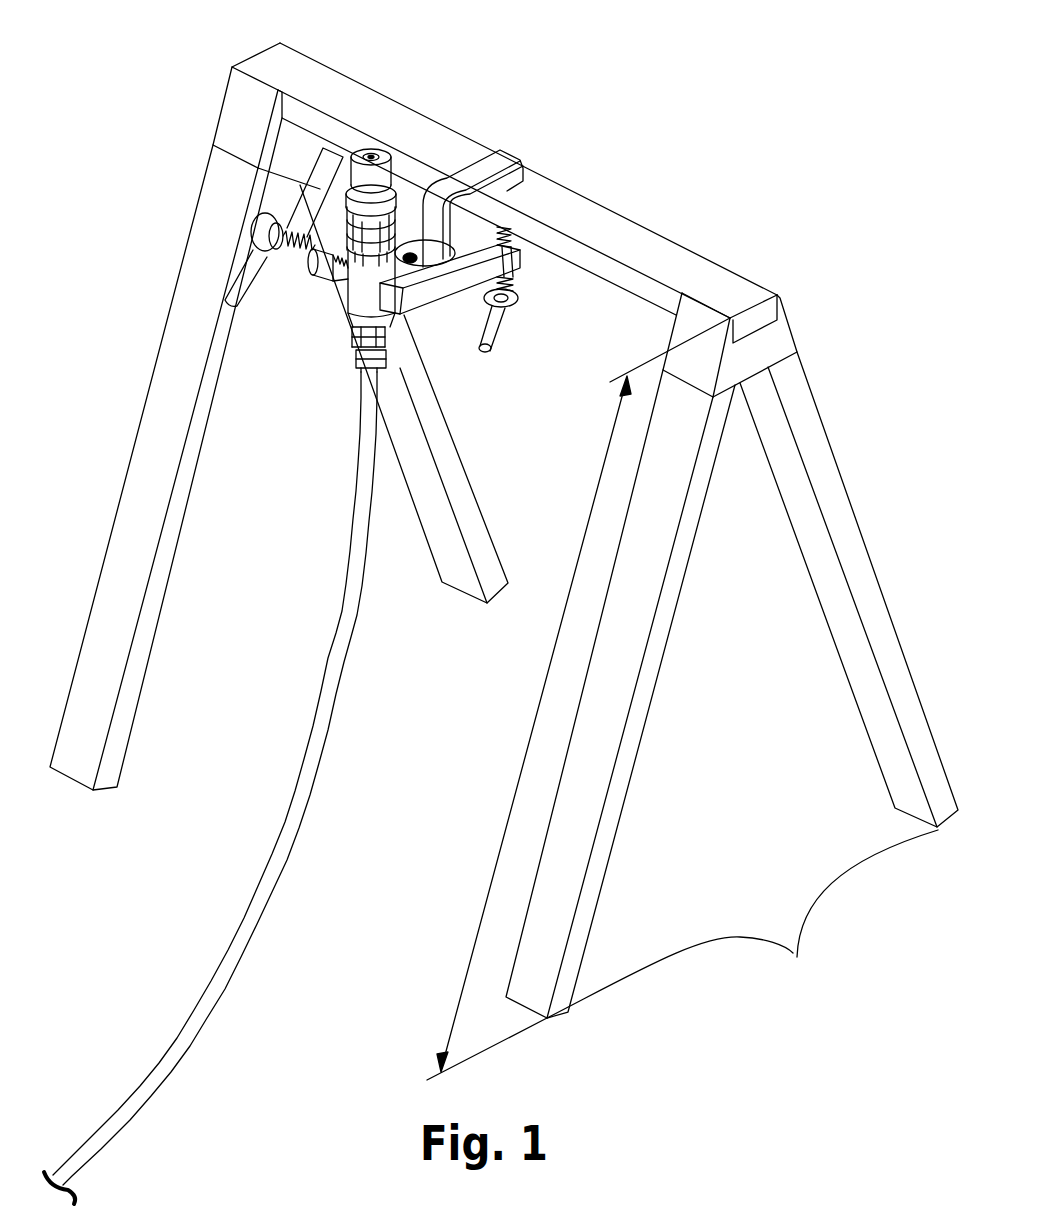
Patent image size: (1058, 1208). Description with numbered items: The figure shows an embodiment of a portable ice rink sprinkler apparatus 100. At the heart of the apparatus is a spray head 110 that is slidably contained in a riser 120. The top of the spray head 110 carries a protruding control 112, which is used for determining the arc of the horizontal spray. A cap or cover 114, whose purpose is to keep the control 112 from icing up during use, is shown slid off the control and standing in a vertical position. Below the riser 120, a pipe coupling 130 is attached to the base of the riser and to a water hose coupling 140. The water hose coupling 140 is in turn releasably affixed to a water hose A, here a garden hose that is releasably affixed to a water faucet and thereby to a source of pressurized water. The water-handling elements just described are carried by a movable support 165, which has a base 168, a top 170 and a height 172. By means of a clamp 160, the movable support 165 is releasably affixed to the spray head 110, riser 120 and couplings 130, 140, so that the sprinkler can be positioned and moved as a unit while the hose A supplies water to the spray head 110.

The portable ice rink sprinkler apparatus 100 is at (606, 120).
The spray head 110 is at (367, 158).
The protruding control 112 is at (372, 152).
The cap or cover 114 is at (385, 153).
The riser 120 is at (340, 179).
The pipe coupling 130 is at (352, 329).
The water hose coupling 140 is at (357, 361).
The clamp 160 is at (441, 257).
The movable support 165 is at (852, 513).
The base 168 is at (682, 955).
The top 170 is at (707, 277).
The height 172 is at (583, 695).
The water hose A is at (322, 705).